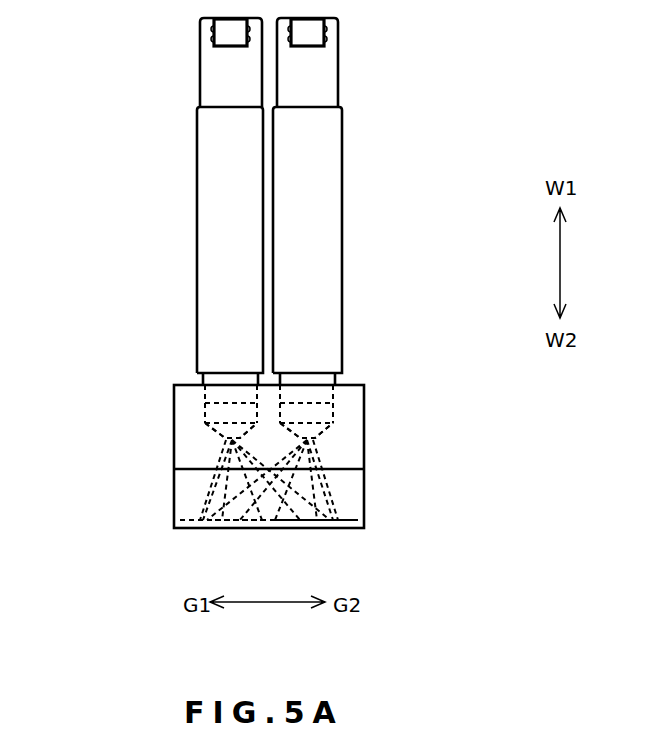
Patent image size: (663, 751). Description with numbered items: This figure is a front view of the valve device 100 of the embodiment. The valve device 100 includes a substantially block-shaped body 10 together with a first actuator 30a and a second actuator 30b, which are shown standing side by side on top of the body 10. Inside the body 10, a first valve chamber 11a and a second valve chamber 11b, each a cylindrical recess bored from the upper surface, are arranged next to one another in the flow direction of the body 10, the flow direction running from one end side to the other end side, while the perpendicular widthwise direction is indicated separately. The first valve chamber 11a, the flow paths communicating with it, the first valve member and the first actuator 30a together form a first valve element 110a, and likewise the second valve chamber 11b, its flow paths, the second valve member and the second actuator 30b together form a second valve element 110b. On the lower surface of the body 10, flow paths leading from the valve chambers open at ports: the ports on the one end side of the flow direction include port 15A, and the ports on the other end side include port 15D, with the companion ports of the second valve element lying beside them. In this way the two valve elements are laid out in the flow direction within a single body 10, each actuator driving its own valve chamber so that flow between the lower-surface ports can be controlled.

The valve device 100 is at (277, 285).
The first actuator 30a is at (217, 222).
The second actuator 30b is at (325, 218).
The first valve element 110a is at (175, 326).
The second valve element 110b is at (370, 326).
The body 10 is at (366, 388).
The first valve chamber 11a is at (192, 432).
The second valve chamber 11b is at (346, 430).
The port 15A is at (180, 524).
The port 15D is at (360, 524).